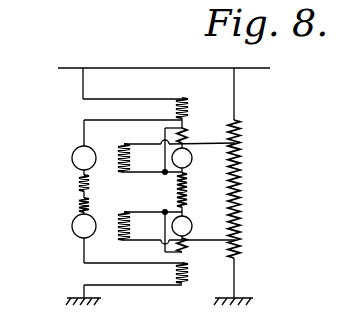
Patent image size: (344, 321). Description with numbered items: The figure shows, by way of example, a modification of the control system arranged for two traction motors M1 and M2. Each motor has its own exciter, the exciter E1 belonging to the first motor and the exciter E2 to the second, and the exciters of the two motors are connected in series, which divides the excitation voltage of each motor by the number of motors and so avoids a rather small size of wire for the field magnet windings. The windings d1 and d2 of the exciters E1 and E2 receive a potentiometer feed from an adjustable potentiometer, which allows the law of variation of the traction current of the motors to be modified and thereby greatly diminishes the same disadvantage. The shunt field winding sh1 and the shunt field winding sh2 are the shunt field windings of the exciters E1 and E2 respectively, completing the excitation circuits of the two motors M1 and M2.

The traction motor M1 is at (71, 158).
The traction motor M2 is at (71, 226).
The exciter E1 is at (190, 158).
The exciter E2 is at (190, 226).
The shunt field winding sh1 is at (194, 135).
The shunt field winding sh2 is at (194, 250).
The winding d1 is at (141, 173).
The winding d2 is at (196, 190).